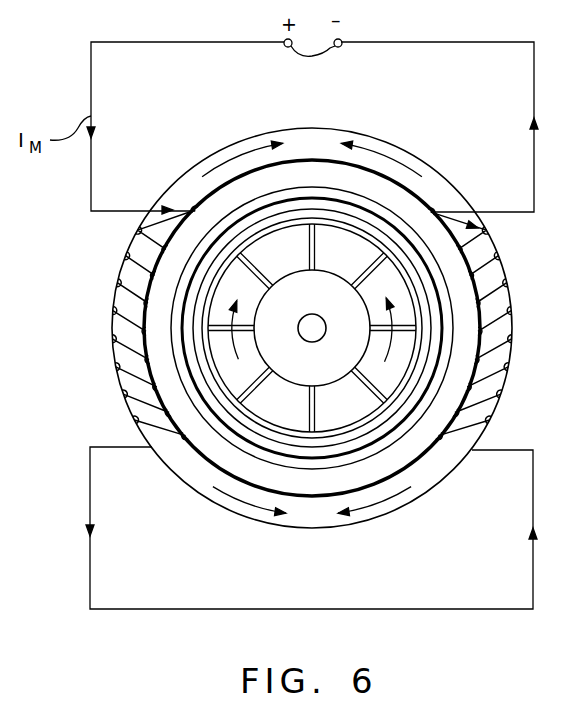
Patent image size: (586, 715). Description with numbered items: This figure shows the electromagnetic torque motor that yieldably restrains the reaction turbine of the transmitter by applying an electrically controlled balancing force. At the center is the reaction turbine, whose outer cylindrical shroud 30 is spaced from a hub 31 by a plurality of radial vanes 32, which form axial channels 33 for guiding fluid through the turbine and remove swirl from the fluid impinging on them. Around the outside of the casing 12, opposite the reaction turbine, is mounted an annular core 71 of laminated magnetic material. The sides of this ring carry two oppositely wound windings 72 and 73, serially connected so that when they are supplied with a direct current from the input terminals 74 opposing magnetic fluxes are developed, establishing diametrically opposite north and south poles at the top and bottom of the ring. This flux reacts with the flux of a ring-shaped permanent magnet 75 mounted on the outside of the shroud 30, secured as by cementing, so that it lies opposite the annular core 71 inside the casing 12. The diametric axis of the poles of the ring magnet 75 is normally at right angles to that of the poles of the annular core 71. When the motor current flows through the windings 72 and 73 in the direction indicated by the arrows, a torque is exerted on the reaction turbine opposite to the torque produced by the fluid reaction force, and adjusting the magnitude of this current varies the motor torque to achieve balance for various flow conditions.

The casing 12 is at (185, 264).
The outer cylindrical shroud 30 is at (230, 286).
The hub 31 is at (292, 383).
The radial vanes 32 is at (313, 413).
The axial channels 33 is at (350, 255).
The annular core 71 is at (405, 148).
The winding 72 is at (112, 340).
The winding 73 is at (490, 230).
The input terminals 74 is at (330, 58).
The ring-shaped permanent magnet 75 is at (202, 375).